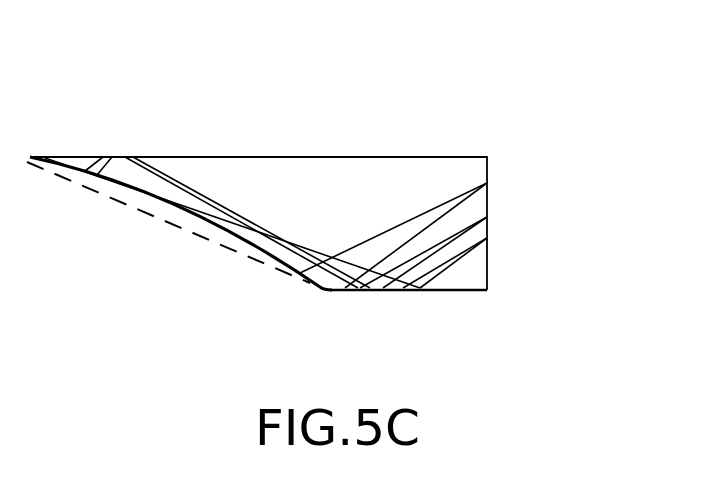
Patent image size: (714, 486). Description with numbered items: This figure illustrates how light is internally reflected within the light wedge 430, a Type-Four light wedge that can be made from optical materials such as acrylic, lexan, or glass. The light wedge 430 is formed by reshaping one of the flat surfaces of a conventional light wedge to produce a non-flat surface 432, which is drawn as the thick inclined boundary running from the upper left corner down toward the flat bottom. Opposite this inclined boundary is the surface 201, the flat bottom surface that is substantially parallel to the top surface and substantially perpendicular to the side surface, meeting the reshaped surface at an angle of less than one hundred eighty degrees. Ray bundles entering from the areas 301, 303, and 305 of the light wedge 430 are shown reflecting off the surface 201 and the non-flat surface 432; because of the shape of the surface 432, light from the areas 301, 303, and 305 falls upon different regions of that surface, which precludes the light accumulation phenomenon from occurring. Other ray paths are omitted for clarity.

The light wedge 430 is at (275, 117).
The non-flat surface 432 is at (187, 211).
The surface 201 is at (409, 290).
The area 301 is at (495, 181).
The area 303 is at (497, 218).
The area 305 is at (497, 237).